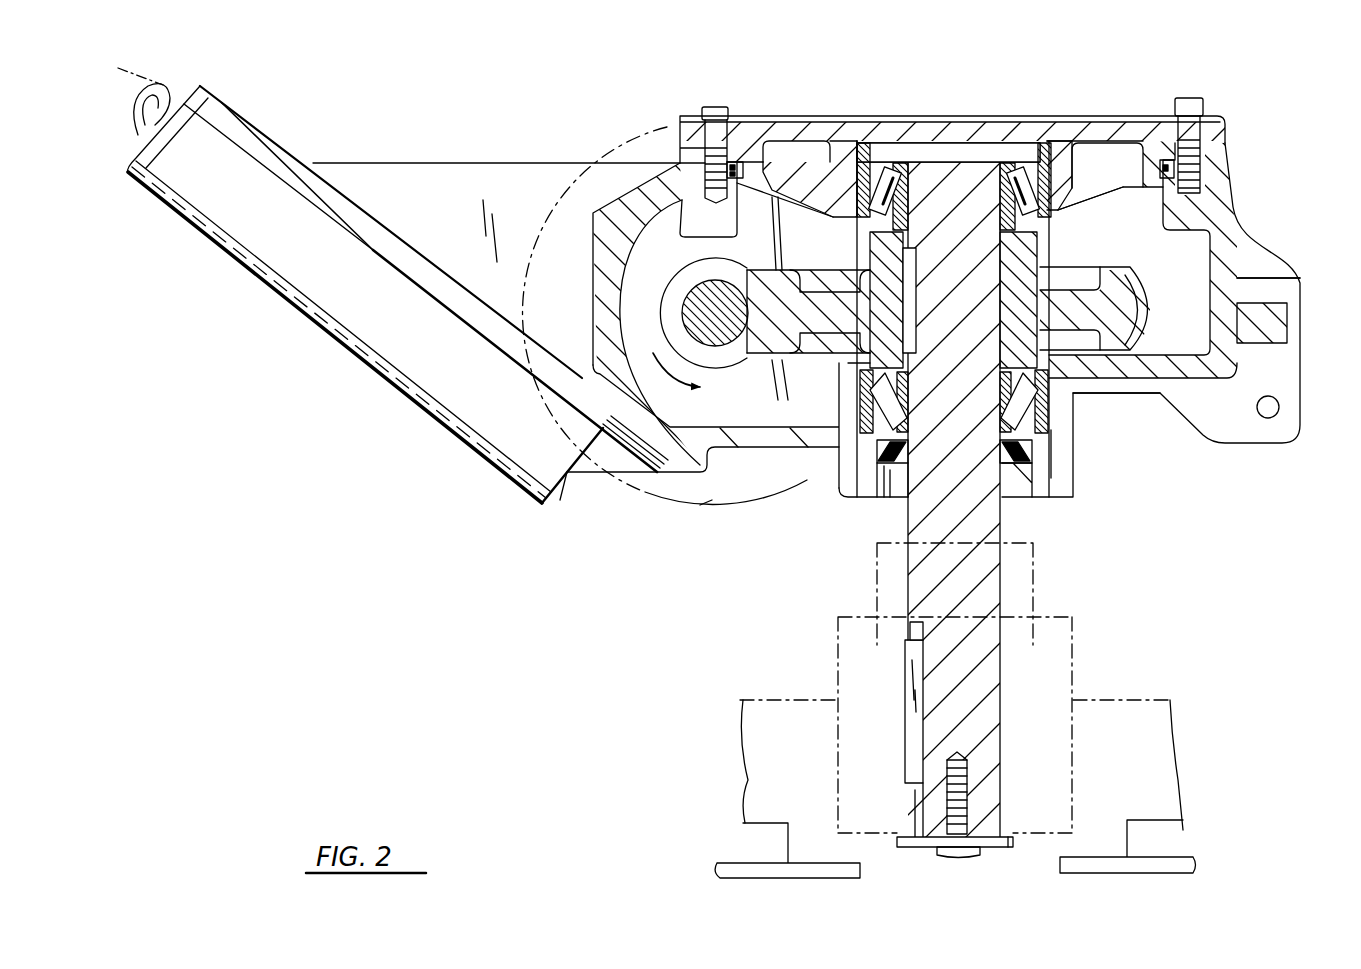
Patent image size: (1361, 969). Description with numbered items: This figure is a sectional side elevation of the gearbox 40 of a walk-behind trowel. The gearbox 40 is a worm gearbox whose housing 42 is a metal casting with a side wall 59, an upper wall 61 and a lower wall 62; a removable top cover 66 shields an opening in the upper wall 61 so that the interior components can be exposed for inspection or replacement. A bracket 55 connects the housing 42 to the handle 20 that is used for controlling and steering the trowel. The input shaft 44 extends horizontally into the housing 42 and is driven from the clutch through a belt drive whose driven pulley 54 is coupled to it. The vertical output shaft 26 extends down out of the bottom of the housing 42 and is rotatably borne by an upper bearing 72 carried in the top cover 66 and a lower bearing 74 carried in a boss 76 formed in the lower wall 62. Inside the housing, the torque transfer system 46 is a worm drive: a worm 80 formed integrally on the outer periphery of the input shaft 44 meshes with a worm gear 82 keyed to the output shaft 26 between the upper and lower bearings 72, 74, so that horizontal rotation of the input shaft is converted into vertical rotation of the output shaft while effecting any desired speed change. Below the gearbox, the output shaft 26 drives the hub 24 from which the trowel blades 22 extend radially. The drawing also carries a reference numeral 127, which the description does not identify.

The handle 20 is at (152, 152).
The trowel blades 22 is at (800, 888).
The hub 24 is at (1170, 718).
The output shaft 26 is at (907, 515).
The gearbox 40 is at (1275, 205).
The housing 42 is at (1247, 147).
The input shaft 44 is at (720, 336).
The torque transfer system 46 is at (1063, 247).
The driven pulley 54 is at (707, 507).
The bracket 55 is at (640, 477).
The side wall 59 is at (1240, 280).
The upper wall 61 is at (1218, 108).
The lower wall 62 is at (1115, 385).
The top cover 66 is at (1017, 128).
The upper bearing 72 is at (862, 192).
The lower bearing 74 is at (1047, 433).
The boss 76 is at (862, 485).
The worm 80 is at (597, 283).
The worm gear 82 is at (1130, 283).
The direction of rotation 127 is at (1142, 690).